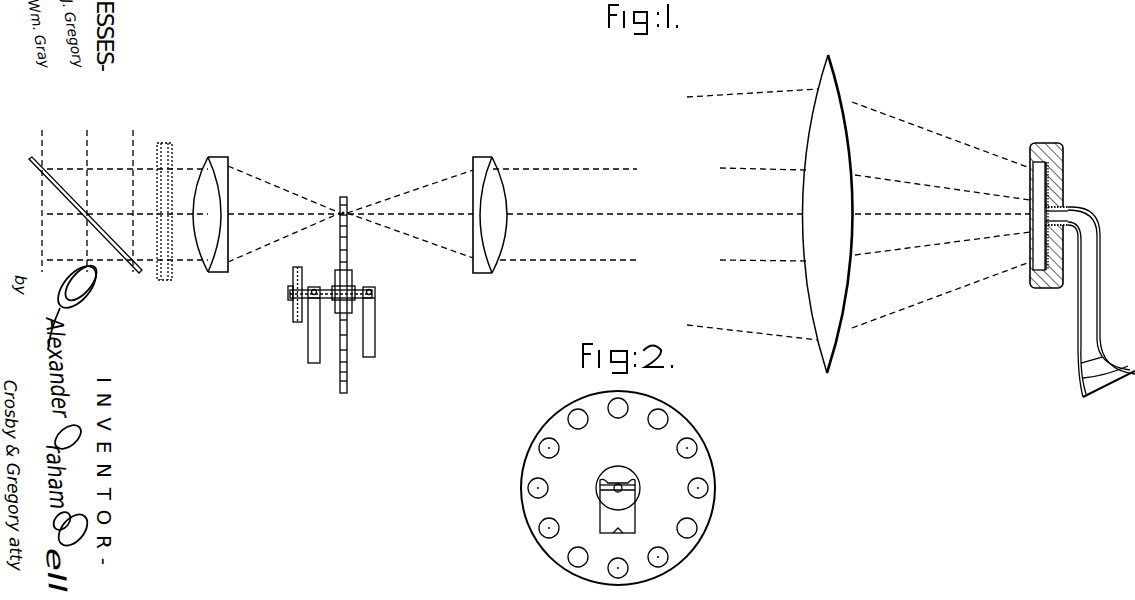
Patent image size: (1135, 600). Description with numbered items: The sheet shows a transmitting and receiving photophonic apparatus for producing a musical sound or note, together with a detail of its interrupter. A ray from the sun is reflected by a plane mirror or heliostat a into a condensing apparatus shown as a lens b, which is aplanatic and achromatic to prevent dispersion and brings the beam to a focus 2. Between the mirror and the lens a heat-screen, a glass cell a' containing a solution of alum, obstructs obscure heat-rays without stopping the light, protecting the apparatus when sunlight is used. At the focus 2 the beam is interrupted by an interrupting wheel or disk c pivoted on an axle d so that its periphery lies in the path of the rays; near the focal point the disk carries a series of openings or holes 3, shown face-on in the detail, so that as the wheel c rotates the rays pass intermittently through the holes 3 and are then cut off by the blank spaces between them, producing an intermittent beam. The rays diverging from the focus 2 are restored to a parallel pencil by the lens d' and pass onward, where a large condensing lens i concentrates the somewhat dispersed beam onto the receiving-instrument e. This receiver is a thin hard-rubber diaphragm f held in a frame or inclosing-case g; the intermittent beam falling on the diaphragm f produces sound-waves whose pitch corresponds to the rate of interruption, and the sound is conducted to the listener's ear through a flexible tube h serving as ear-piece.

In FIG. 1, the plane mirror or heliostat a is at (85, 215).
In FIG. 1, the glass cell a' is at (164, 202).
In FIG. 1, the lens b is at (210, 206).
In FIG. 1, the focus 2 is at (345, 211).
In FIG. 1, the interrupting wheel or disk c is at (349, 247).
In FIG. 2, the interrupting wheel or disk c is at (618, 488).
In FIG. 1, the axle d is at (339, 315).
In FIG. 2, the axle d is at (623, 494).
In FIG. 1, the lens d' is at (490, 203).
In FIG. 1, the lens i is at (835, 69).
In FIG. 1, the receiving-instrument e is at (941, 215).
In FIG. 1, the diaphragm f is at (942, 214).
In FIG. 1, the frame or inclosing-case g is at (1049, 202).
In FIG. 1, the flexible tube h is at (1100, 298).
In FIG. 2, the openings or holes 3 is at (618, 488).